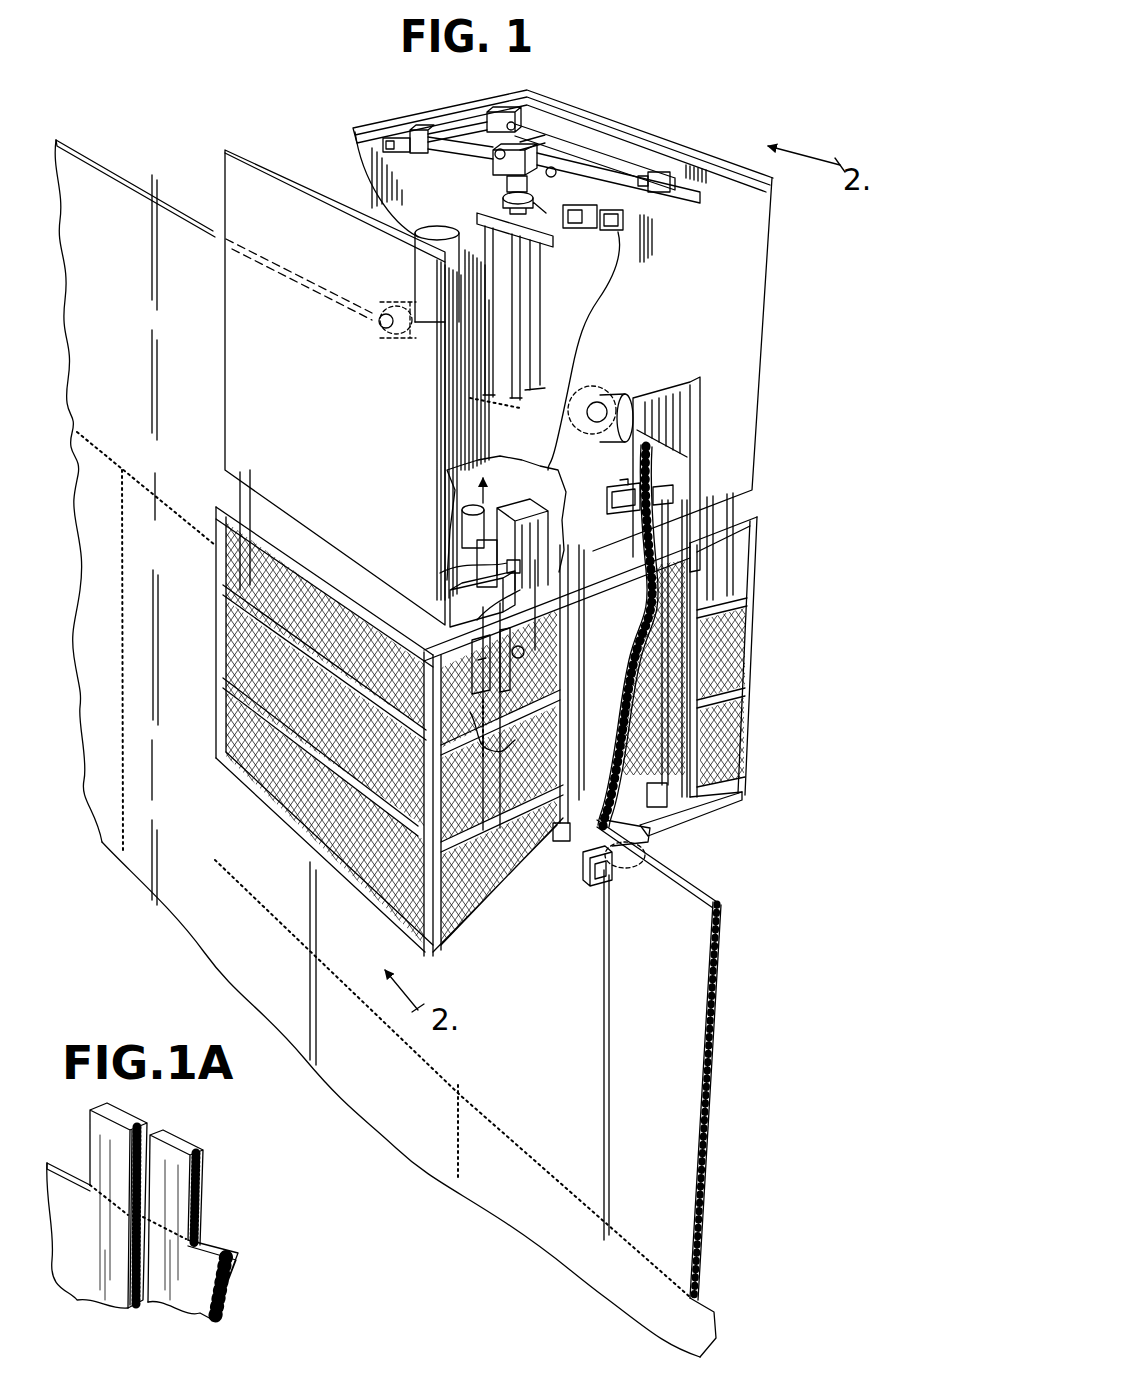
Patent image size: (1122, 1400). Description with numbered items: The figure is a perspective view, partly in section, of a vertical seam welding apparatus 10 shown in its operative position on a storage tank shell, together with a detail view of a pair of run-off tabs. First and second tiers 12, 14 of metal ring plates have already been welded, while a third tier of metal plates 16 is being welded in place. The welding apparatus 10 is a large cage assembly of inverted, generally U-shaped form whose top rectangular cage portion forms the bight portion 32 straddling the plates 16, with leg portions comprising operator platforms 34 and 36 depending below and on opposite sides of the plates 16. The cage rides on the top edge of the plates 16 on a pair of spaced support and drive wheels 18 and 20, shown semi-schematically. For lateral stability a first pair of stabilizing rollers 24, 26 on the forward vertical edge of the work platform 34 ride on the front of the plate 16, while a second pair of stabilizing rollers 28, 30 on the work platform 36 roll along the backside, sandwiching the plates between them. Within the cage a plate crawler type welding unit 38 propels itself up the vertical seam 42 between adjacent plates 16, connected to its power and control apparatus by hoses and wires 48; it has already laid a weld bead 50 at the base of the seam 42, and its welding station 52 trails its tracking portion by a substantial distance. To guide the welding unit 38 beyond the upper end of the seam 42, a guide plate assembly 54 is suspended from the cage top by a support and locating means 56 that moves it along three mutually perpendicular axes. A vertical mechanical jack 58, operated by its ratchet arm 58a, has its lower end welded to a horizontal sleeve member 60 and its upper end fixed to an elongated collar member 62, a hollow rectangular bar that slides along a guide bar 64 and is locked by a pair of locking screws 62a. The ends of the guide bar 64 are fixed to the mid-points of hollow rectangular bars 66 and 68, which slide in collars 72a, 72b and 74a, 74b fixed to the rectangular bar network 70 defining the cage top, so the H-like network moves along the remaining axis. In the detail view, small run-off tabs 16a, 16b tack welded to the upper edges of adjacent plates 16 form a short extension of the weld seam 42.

In FIG. 1, the welding apparatus 10 is at (763, 413).
In FIG. 1, the first tier 12 is at (378, 1112).
In FIG. 1, the second tier 14 is at (687, 1017).
In FIG. 1, the metal plates 16 is at (143, 205).
In FIG. 1A, the metal plates 16 is at (77, 1253).
In FIG. 1A, the run-off tab 16a is at (107, 1143).
In FIG. 1A, the run-off tab 16b is at (180, 1181).
In FIG. 1, the support and drive wheel 18 is at (372, 284).
In FIG. 1, the support and drive wheel 20 is at (645, 396).
In FIG. 1, the stabilizing roller 24 is at (660, 527).
In FIG. 1, the stabilizing roller 26 is at (600, 873).
In FIG. 1, the stabilizing roller 28 is at (677, 493).
In FIG. 1, the stabilizing roller 30 is at (633, 840).
In FIG. 1, the bight portion 32 is at (252, 147).
In FIG. 1, the operator platform 34 is at (214, 504).
In FIG. 1, the operator platform 36 is at (757, 543).
In FIG. 1, the welding unit 38 is at (553, 580).
In FIG. 1, the seam 42 is at (468, 399).
In FIG. 1A, the seam 42 is at (127, 1293).
In FIG. 1, the hoses and wires 48 is at (453, 553).
In FIG. 1, the weld bead 50 is at (500, 752).
In FIG. 1, the welding station 52 is at (482, 672).
In FIG. 1, the guide plate assembly 54 is at (553, 293).
In FIG. 1, the support and locating means 56 is at (540, 138).
In FIG. 1, the mechanical jack 58 is at (502, 199).
In FIG. 1, the ratchet arm 58a is at (506, 184).
In FIG. 1, the sleeve member 60 is at (530, 238).
In FIG. 1, the collar member 62 is at (558, 150).
In FIG. 1, the locking screw 62a is at (492, 160).
In FIG. 1, the guide bar 64 is at (617, 187).
In FIG. 1, the hollow rectangular bar 66 is at (443, 130).
In FIG. 1, the hollow rectangular bar 68 is at (625, 270).
In FIG. 1, the rectangular bar network 70 is at (370, 126).
In FIG. 1, the collar 72a is at (416, 128).
In FIG. 1, the collar 72b is at (489, 110).
In FIG. 1, the collar 74a is at (624, 204).
In FIG. 1, the collar 74b is at (677, 183).